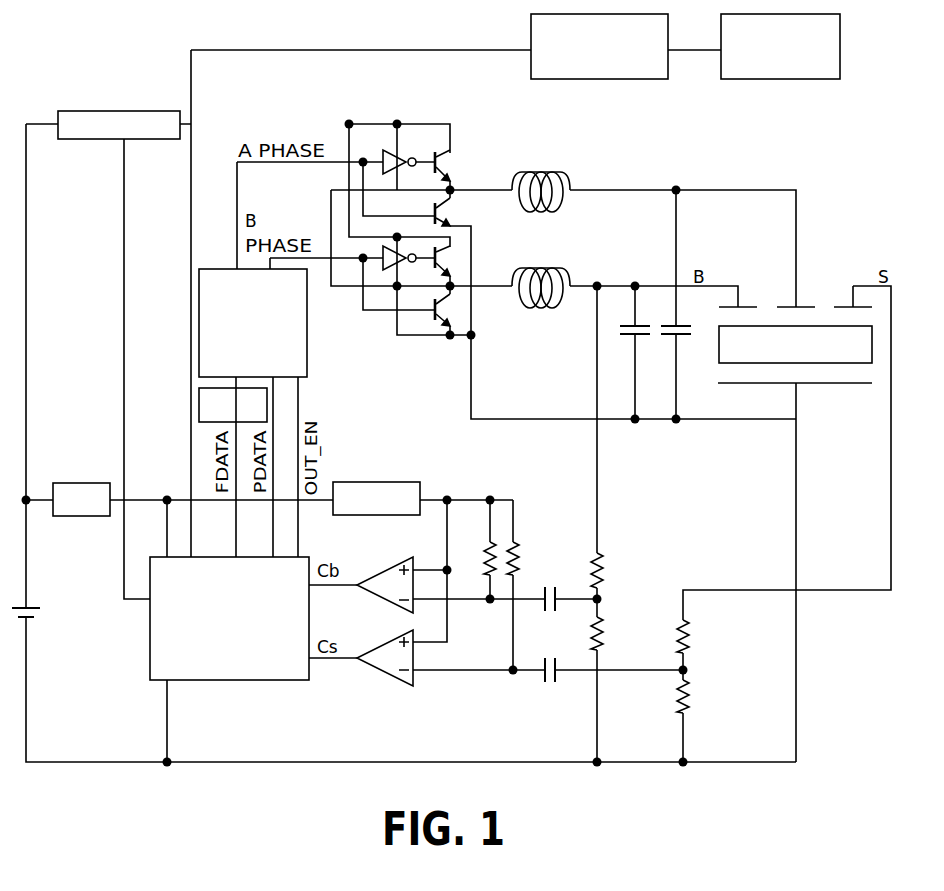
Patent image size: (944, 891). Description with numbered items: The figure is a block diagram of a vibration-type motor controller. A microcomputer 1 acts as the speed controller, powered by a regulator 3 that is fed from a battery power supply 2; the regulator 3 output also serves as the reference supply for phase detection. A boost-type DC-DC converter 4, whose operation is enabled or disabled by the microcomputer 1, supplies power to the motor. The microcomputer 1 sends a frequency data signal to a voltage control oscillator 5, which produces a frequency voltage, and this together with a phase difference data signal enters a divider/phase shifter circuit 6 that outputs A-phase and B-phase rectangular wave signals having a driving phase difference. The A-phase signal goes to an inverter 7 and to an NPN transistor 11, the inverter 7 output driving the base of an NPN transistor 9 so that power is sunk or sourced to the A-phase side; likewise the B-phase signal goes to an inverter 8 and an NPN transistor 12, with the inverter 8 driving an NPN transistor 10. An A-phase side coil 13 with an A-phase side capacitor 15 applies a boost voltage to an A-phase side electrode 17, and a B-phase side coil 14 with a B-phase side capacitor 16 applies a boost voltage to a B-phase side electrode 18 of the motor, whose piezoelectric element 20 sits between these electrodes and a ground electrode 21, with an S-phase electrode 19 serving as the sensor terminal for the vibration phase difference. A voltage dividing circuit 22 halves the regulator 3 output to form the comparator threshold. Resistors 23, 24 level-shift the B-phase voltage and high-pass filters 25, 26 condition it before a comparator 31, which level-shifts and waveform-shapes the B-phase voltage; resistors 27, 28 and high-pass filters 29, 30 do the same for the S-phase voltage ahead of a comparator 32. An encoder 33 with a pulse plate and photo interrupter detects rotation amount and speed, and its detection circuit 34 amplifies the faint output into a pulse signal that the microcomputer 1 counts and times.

The microcomputer 1 is at (258, 681).
The power supply 2 is at (33, 618).
The regulator 3 is at (97, 518).
The DC-DC converter 4 is at (158, 110).
The voltage control oscillator 5 is at (199, 405).
The divider/phase shifter circuit 6 is at (310, 323).
The inverter at A-phase side 7 is at (383, 150).
The inverter at B-phase side 8 is at (383, 248).
The NPN transistor for supplying power to A-phase side 9 is at (452, 156).
The NPN transistor for supplying power to B-phase side 10 is at (452, 252).
The NPN transistor at A-phase side 11 is at (452, 222).
The NPN transistor at B-phase side 12 is at (452, 318).
The A-phase side coil 13 is at (540, 171).
The B-phase side coil 14 is at (541, 268).
The A-phase side capacitor 15 is at (681, 336).
The B-phase side capacitor 16 is at (643, 336).
The A-phase side electrode 17 is at (806, 305).
The B-phase side electrode 18 is at (744, 305).
The S-phase electrode 19 is at (838, 305).
The piezoelectric element 20 is at (730, 365).
The ground electrode 21 is at (826, 385).
The voltage dividing circuit 22 is at (383, 482).
The resistor 23 is at (604, 570).
The resistor 24 is at (604, 636).
The high-pass filter 25 is at (545, 613).
The high-pass filter 26 is at (488, 560).
The resistor 27 is at (690, 640).
The resistor 28 is at (690, 702).
The high-pass filter 29 is at (540, 684).
The high-pass filter 30 is at (520, 552).
The comparator 31 is at (375, 594).
The comparator 32 is at (372, 668).
The encoder 33 is at (752, 80).
The detection circuit 34 is at (613, 80).